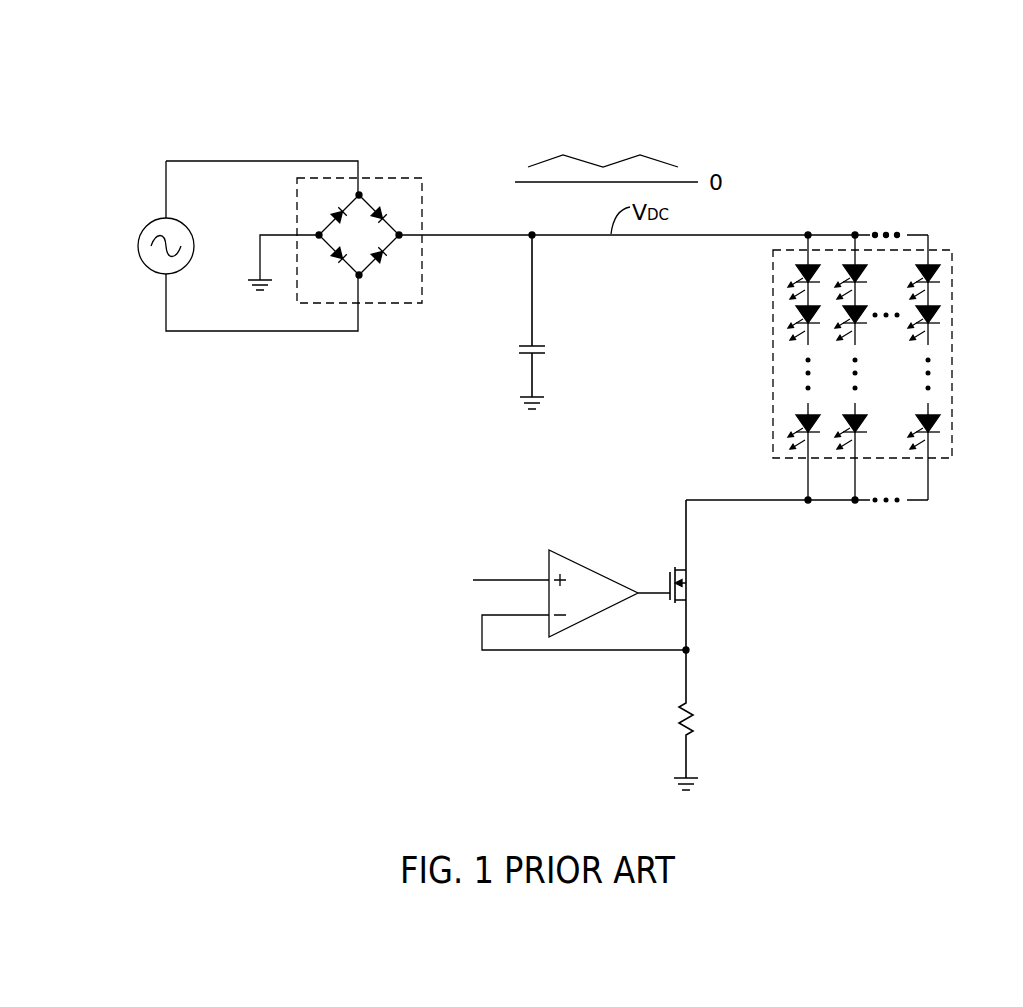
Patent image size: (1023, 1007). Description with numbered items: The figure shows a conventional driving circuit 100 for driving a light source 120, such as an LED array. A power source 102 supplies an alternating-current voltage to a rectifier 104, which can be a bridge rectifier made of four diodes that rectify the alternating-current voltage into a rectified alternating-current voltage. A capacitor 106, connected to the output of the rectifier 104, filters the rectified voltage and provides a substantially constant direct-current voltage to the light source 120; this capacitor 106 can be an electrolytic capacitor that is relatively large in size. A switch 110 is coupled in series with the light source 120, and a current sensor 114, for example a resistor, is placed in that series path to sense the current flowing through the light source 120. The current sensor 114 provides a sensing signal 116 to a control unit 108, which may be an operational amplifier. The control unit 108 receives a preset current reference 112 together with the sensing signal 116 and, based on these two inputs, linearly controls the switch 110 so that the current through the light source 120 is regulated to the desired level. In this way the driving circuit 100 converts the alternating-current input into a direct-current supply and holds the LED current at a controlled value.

The driving circuit 100 is at (238, 113).
The power source 102 is at (151, 225).
The rectifier 104 is at (379, 178).
The capacitor 106 is at (537, 347).
The control unit 108 is at (611, 578).
The switch 110 is at (689, 585).
The current reference 112 is at (533, 580).
The current sensor 114 is at (697, 726).
The sensing signal 116 is at (610, 650).
The light source 120 is at (773, 385).